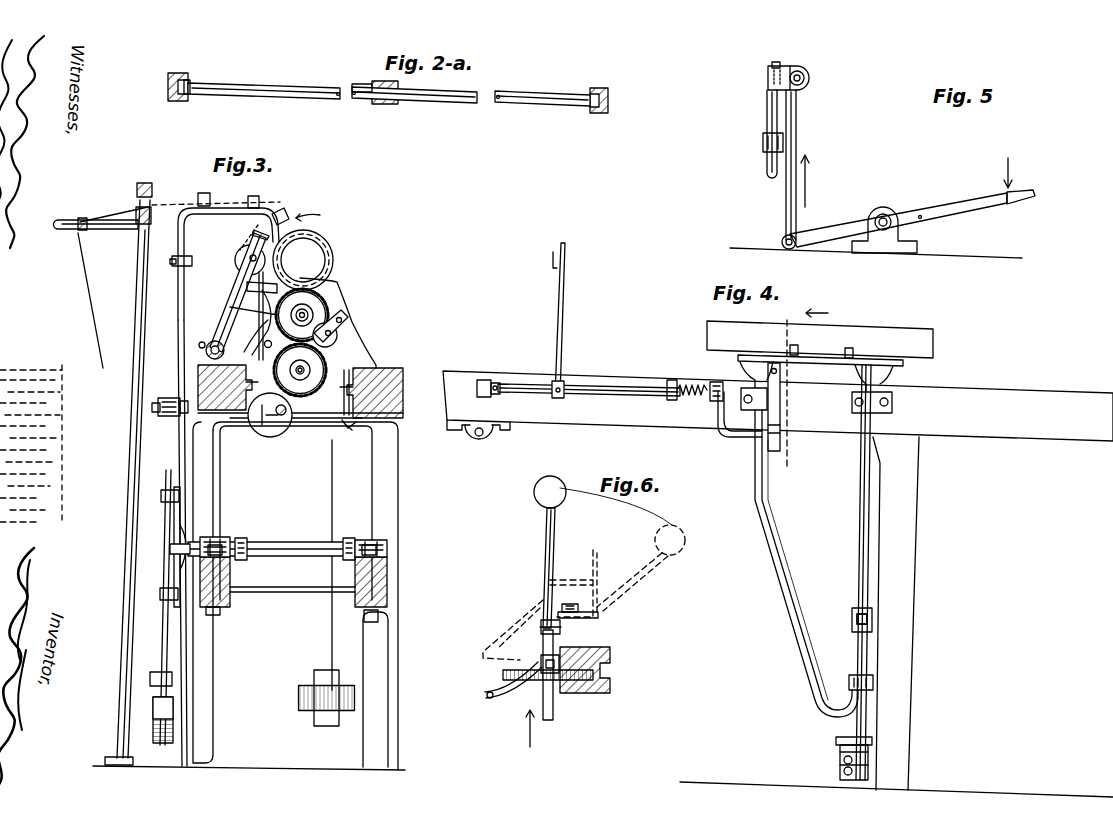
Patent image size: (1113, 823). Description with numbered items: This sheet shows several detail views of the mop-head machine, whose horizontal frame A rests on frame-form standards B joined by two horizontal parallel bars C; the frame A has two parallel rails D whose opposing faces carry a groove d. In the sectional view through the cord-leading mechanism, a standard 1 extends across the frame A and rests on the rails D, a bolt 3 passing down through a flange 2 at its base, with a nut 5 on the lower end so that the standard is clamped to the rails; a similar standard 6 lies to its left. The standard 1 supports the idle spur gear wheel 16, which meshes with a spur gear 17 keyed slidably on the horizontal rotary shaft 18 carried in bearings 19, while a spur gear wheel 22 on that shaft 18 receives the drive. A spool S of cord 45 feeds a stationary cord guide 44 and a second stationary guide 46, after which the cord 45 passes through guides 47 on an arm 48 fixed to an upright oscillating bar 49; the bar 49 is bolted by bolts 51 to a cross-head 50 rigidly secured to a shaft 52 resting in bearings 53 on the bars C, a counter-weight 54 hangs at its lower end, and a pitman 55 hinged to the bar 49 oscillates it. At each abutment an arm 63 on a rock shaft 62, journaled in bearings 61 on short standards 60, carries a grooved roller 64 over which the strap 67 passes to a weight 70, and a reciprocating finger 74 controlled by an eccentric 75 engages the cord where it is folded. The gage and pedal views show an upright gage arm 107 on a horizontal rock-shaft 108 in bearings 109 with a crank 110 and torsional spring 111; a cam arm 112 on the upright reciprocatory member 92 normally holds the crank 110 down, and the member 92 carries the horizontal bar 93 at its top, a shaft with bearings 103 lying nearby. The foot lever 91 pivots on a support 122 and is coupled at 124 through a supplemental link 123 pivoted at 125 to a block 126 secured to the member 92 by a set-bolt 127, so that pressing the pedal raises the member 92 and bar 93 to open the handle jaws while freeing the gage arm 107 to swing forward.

In FIG. 2A, the short standard 60 is at (186, 78).
In FIG. 2A, the bearing 61 is at (190, 97).
In FIG. 2A, the rock shaft 62 is at (255, 86).
In FIG. 3, the stationary cord guide 44 is at (78, 222).
In FIG. 3, the cord 45 is at (118, 213).
In FIG. 3, the stationary guide 46 is at (148, 184).
In FIG. 3, the guides 47 is at (283, 213).
In FIG. 3, the arm 48 is at (190, 222).
In FIG. 3, the upright oscillating bar 49 is at (183, 289).
In FIG. 3, the reciprocating finger 74 is at (250, 246).
In FIG. 3, the grooved roller 64 is at (246, 265).
In FIG. 3, the arm 63 is at (238, 319).
In FIG. 3, the bearings 19 is at (268, 316).
In FIG. 3, the idle spur gear wheel 16 is at (325, 305).
In FIG. 3, the standard 1 is at (352, 346).
In FIG. 3, the horizontal rotary shaft 18 is at (304, 370).
In FIG. 3, the flange 2 is at (332, 360).
In FIG. 3, the spur gear wheel 22 is at (264, 347).
In FIG. 3, the spur gear 17 is at (312, 392).
In FIG. 3, the bolt 3 is at (340, 404).
In FIG. 3, the nut 5 is at (356, 431).
In FIG. 3, the eccentric 75 is at (282, 432).
In FIG. 3, the cord or strap 67 is at (336, 458).
In FIG. 3, the pitman 55 is at (168, 418).
In FIG. 3, the bolts 51 is at (162, 494).
In FIG. 3, the cross-head 50 is at (178, 540).
In FIG. 3, the bearings 53 is at (218, 538).
In FIG. 3, the shaft 52 is at (272, 545).
In FIG. 3, the counter-weight 54 is at (153, 706).
In FIG. 3, the weight 70 is at (315, 712).
In FIG. 3, the spool or bale of cord S is at (51, 377).
In FIG. 3, the horizontal frame A is at (333, 323).
In FIG. 4, the horizontal frame A is at (778, 404).
In FIG. 3, the frame-form standards B is at (392, 468).
In FIG. 4, the frame-form standards B is at (905, 586).
In FIG. 3, the horizontal parallel bars C is at (236, 607).
In FIG. 3, the rails D is at (200, 383).
In FIG. 4, the rails D is at (981, 412).
In FIG. 6, the rails D is at (595, 698).
In FIG. 3, the groove d is at (352, 392).
In FIG. 6, the groove d is at (611, 669).
In FIG. 4, the upright gage arm 107 is at (566, 298).
In FIG. 6, the upright gage arm 107 is at (556, 528).
In FIG. 4, the horizontal rock-shaft 108 is at (605, 383).
In FIG. 4, the bearings 109 is at (487, 380).
In FIG. 4, the crank 110 is at (742, 440).
In FIG. 6, the crank 110 is at (532, 684).
In FIG. 4, the torsional spring 111 is at (700, 382).
In FIG. 4, the cam arm 112 is at (782, 438).
In FIG. 6, the cam arm 112 is at (500, 680).
In FIG. 4, the bearings 103 is at (484, 445).
In FIG. 4, the horizontal bar 93 is at (925, 343).
In FIG. 6, the horizontal bar 93 is at (600, 618).
In FIG. 4, the standard 6 is at (802, 395).
In FIG. 4, the upright reciprocatory member 92 is at (796, 588).
In FIG. 5, the upright reciprocatory member 92 is at (766, 106).
In FIG. 6, the upright reciprocatory member 92 is at (552, 722).
In FIG. 4, the supplemental link 123 is at (852, 731).
In FIG. 5, the supplemental link 123 is at (800, 139).
In FIG. 4, the block 126 is at (852, 622).
In FIG. 5, the block 126 is at (768, 80).
In FIG. 4, the set-bolt 127 is at (872, 622).
In FIG. 4, the foot lever 91 is at (838, 742).
In FIG. 5, the foot lever 91 is at (925, 210).
In FIG. 5, the pivot 125 is at (807, 79).
In FIG. 5, the joint 124 is at (782, 240).
In FIG. 5, the support 122 is at (893, 238).